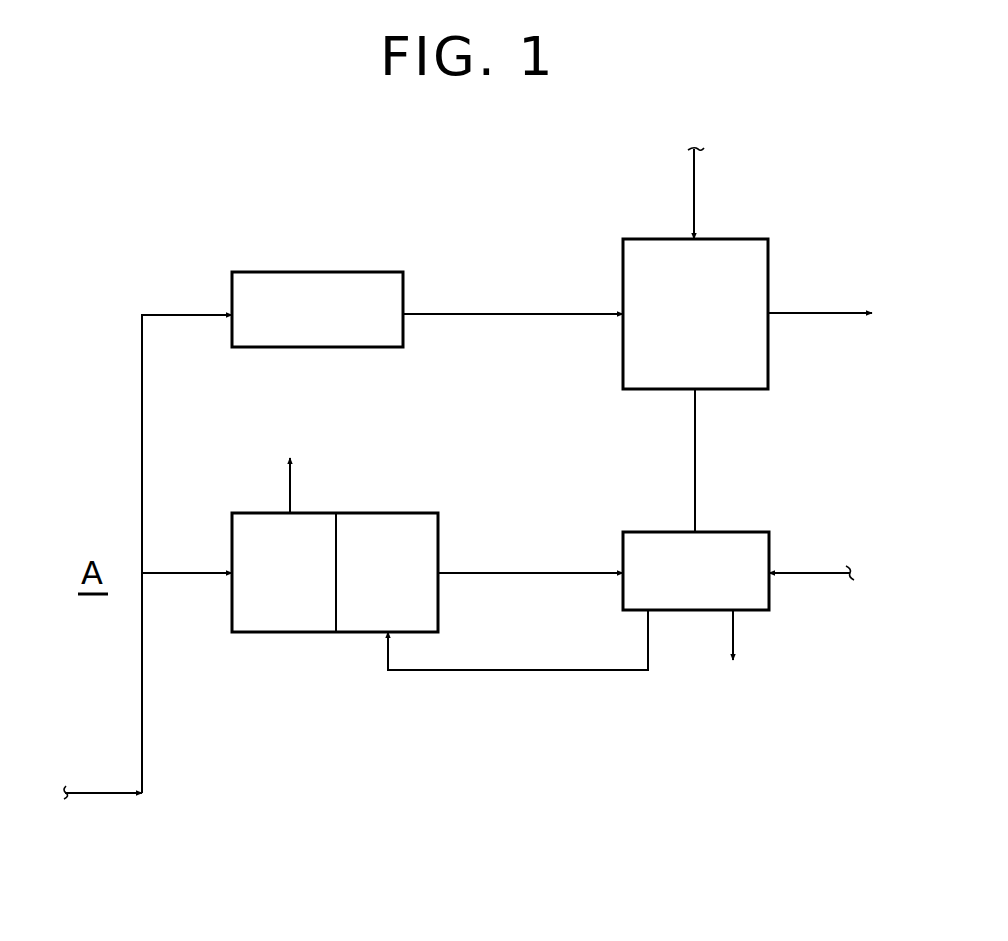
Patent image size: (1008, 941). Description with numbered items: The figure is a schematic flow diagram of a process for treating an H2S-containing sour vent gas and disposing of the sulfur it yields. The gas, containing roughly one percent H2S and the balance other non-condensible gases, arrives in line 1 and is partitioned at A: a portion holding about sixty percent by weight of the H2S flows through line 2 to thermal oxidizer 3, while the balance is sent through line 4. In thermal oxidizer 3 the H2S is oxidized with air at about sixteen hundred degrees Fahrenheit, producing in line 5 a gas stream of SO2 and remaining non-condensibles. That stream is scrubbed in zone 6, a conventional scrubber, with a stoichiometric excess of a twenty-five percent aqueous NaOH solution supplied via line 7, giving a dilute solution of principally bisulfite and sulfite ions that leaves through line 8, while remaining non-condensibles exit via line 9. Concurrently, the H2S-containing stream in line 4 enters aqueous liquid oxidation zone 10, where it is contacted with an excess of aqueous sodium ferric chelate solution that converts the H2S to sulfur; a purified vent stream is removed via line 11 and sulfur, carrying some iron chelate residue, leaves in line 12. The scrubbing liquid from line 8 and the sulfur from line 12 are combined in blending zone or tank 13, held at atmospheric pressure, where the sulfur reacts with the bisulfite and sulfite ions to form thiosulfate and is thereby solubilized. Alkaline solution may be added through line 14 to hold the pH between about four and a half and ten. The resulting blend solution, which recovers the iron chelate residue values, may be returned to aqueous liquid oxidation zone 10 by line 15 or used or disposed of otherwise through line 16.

The line 1 is at (143, 737).
The line 2 is at (143, 412).
The thermal oxidizer 3 is at (340, 348).
The line 4 is at (183, 575).
The line 5 is at (507, 316).
The scrubbing zone 6 is at (769, 352).
The line 7 is at (695, 186).
The line 8 is at (696, 462).
The line 9 is at (810, 312).
The aqueous liquid oxidation zone 10 is at (336, 512).
The line 11 is at (289, 490).
The line 12 is at (524, 575).
The blending zone or tank 13 is at (743, 531).
The line 14 is at (815, 575).
The line 15 is at (522, 672).
The line 16 is at (735, 634).